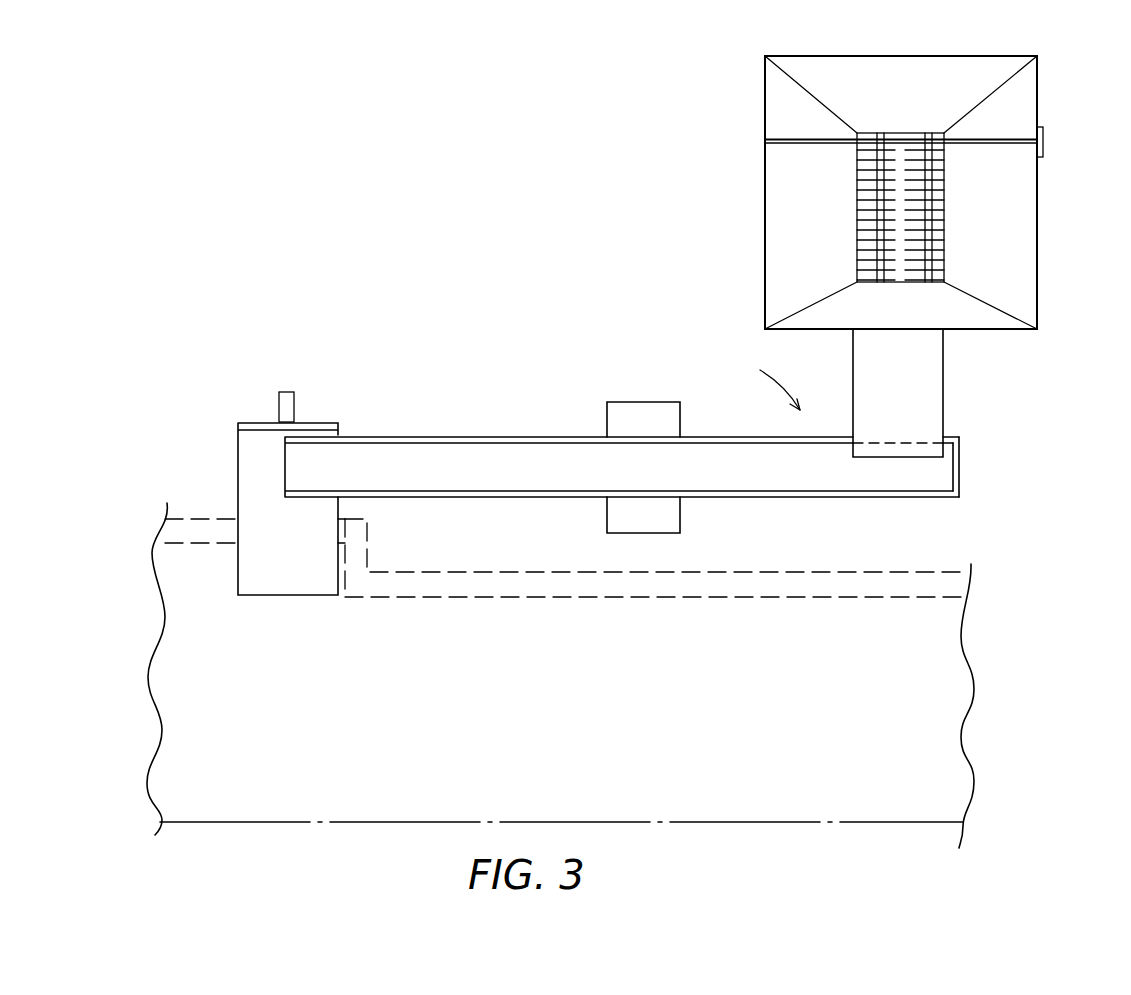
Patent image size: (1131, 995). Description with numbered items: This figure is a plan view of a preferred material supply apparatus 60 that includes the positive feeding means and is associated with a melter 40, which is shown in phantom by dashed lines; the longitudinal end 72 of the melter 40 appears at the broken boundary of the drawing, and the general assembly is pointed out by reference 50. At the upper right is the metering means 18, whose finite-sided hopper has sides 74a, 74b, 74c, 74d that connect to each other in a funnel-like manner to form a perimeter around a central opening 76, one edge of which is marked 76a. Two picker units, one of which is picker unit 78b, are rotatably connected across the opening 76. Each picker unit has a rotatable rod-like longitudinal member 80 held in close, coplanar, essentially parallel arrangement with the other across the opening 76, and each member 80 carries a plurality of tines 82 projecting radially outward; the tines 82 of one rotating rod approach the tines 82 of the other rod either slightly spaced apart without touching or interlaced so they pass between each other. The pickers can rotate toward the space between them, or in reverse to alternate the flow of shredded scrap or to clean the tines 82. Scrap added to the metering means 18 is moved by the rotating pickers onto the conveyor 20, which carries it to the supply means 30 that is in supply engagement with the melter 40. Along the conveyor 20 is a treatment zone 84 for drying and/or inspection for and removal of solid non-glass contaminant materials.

The metering means 18 is at (1028, 228).
The conveyor 20 is at (498, 435).
The supply means 30 is at (252, 425).
The melter 40 is at (882, 572).
The cleaning assembly 50 is at (766, 379).
The material supply apparatus 60 is at (969, 465).
The longitudinal end 72 is at (172, 610).
The side 74a is at (1030, 84).
The side 74b is at (932, 62).
The side 74c is at (777, 171).
The side 74d is at (905, 318).
The opening 76 is at (900, 265).
The filter element edge 76a is at (862, 263).
The picker unit 78b is at (930, 280).
The rotatable rod-like longitudinal member 80 is at (862, 148).
The tines 82 is at (860, 207).
The treatment zones 84 is at (637, 402).